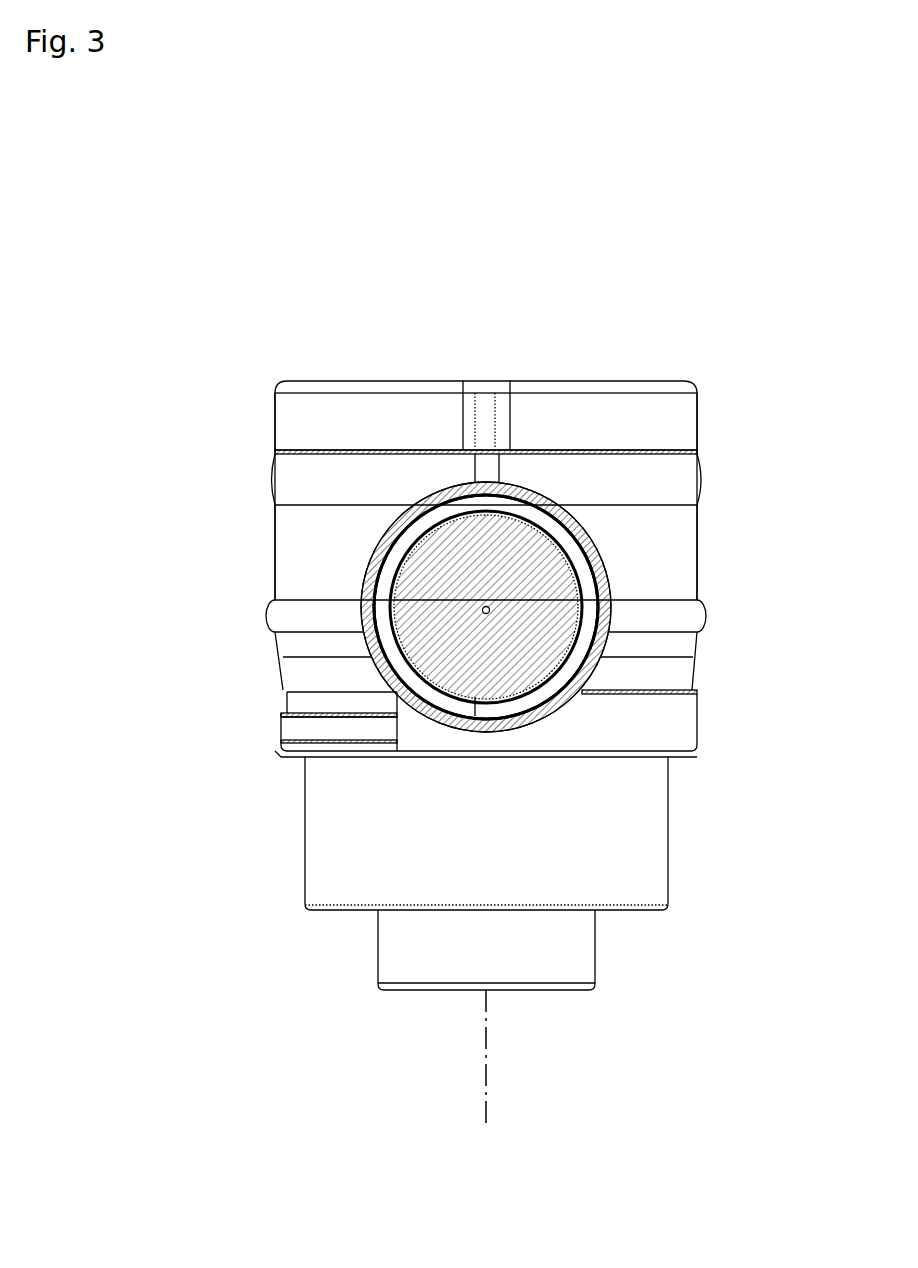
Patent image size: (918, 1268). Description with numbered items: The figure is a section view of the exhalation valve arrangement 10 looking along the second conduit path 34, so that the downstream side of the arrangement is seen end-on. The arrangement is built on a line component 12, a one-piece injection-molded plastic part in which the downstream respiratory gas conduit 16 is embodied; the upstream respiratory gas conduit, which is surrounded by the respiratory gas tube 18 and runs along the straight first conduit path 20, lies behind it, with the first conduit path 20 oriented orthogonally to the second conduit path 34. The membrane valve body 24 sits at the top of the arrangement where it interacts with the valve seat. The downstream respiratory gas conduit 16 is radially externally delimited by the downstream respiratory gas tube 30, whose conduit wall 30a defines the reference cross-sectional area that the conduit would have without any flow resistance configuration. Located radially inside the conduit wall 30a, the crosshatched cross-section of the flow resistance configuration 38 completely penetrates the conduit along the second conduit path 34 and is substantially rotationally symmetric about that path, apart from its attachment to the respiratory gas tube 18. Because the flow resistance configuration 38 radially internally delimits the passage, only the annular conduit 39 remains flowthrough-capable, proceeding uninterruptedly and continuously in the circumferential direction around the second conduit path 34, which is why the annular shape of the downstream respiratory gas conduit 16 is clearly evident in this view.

The exhalation valve arrangement 10 is at (388, 270).
The line component 12 is at (696, 821).
The downstream respiratory gas conduit 16 is at (387, 593).
The respiratory gas tube 18 is at (580, 942).
The first conduit path 20 is at (487, 1098).
The membrane valve body 24 is at (692, 358).
The respiratory gas tube 30 is at (433, 493).
The conduit wall 30a is at (432, 516).
The second conduit path 34 is at (483, 614).
The flow resistance configuration 38 is at (537, 571).
The annular conduit 39 is at (486, 607).